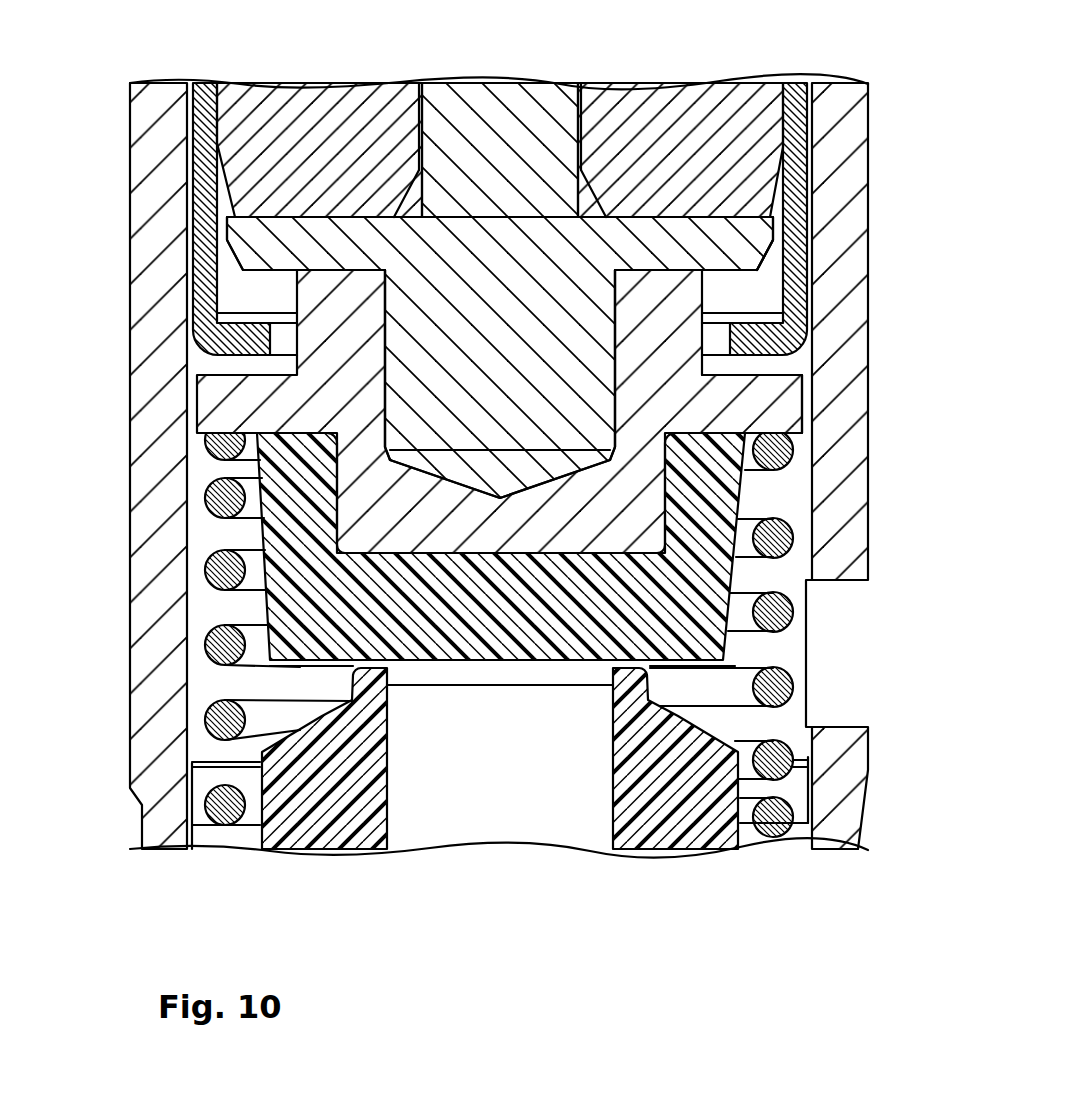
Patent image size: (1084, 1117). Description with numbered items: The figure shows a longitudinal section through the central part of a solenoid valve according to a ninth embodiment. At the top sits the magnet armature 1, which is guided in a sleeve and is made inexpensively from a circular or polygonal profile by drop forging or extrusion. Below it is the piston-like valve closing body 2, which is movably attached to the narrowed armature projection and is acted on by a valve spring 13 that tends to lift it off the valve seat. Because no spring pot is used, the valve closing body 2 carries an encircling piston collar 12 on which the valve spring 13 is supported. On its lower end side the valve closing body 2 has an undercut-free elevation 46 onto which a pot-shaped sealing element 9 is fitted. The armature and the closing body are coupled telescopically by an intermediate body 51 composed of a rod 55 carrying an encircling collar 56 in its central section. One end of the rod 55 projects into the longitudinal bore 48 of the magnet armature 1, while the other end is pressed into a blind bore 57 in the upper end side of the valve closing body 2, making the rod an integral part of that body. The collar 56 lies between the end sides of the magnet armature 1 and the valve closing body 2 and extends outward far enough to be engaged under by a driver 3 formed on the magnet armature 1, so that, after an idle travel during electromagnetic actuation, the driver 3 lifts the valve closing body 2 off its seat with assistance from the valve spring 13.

The magnet armature 1 is at (730, 130).
The valve closing body 2 is at (782, 362).
The driver 3 is at (205, 184).
The sealing element 9 is at (455, 625).
The piston collar 12 is at (783, 407).
The valve spring 13 is at (780, 610).
The elevation 46 is at (410, 523).
The longitudinal bore 48 is at (577, 147).
The intermediate body 51 is at (778, 263).
The rod 55 is at (453, 367).
The collar 56 is at (262, 250).
The blind bore 57 is at (402, 328).